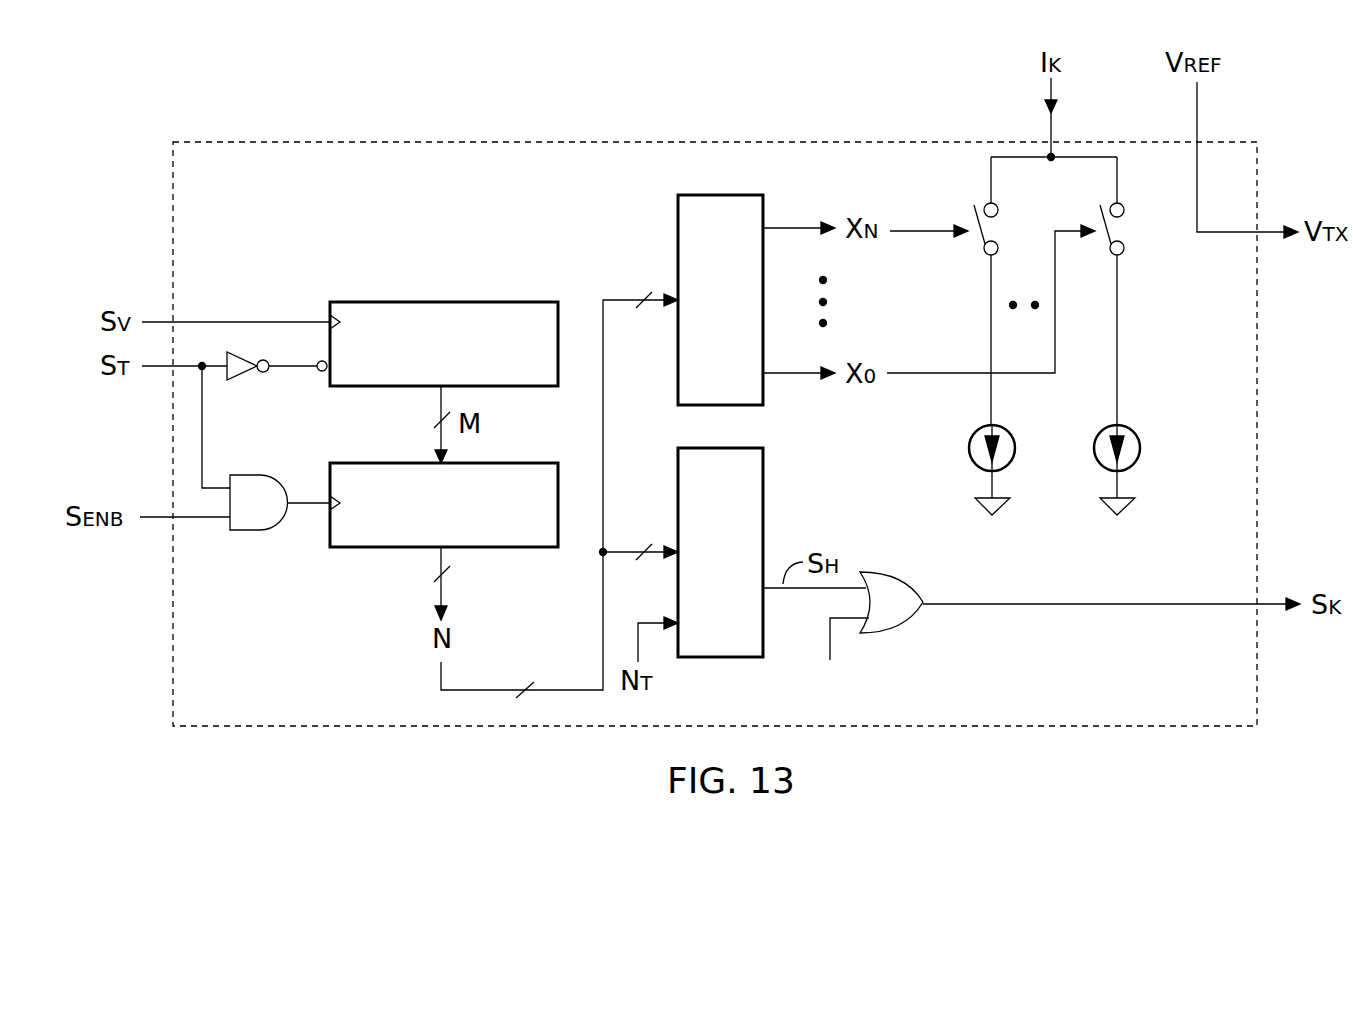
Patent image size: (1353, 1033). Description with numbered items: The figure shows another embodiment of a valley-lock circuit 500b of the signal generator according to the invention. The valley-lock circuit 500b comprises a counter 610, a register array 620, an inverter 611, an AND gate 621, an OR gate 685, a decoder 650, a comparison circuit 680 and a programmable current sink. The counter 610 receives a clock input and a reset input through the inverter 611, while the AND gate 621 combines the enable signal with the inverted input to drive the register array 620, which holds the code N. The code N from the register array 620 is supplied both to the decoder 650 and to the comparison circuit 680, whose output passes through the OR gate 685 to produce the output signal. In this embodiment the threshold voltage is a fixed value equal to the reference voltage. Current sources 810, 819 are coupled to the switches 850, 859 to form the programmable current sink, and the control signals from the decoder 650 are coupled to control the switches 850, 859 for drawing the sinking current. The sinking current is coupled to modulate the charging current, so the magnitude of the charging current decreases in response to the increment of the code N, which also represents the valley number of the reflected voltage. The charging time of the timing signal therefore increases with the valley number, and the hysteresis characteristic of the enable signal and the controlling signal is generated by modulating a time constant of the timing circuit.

The valley-lock circuit 500b is at (240, 141).
The counter 610 is at (437, 302).
The inverter 611 is at (242, 383).
The register array 620 is at (492, 547).
The AND gate 621 is at (258, 535).
The decoder 650 is at (715, 195).
The comparison circuit 680 is at (763, 468).
The OR gate 685 is at (898, 635).
The switch 859 is at (965, 213).
The switch 850 is at (1128, 232).
The current source 819 is at (1015, 448).
The current source 810 is at (1140, 448).